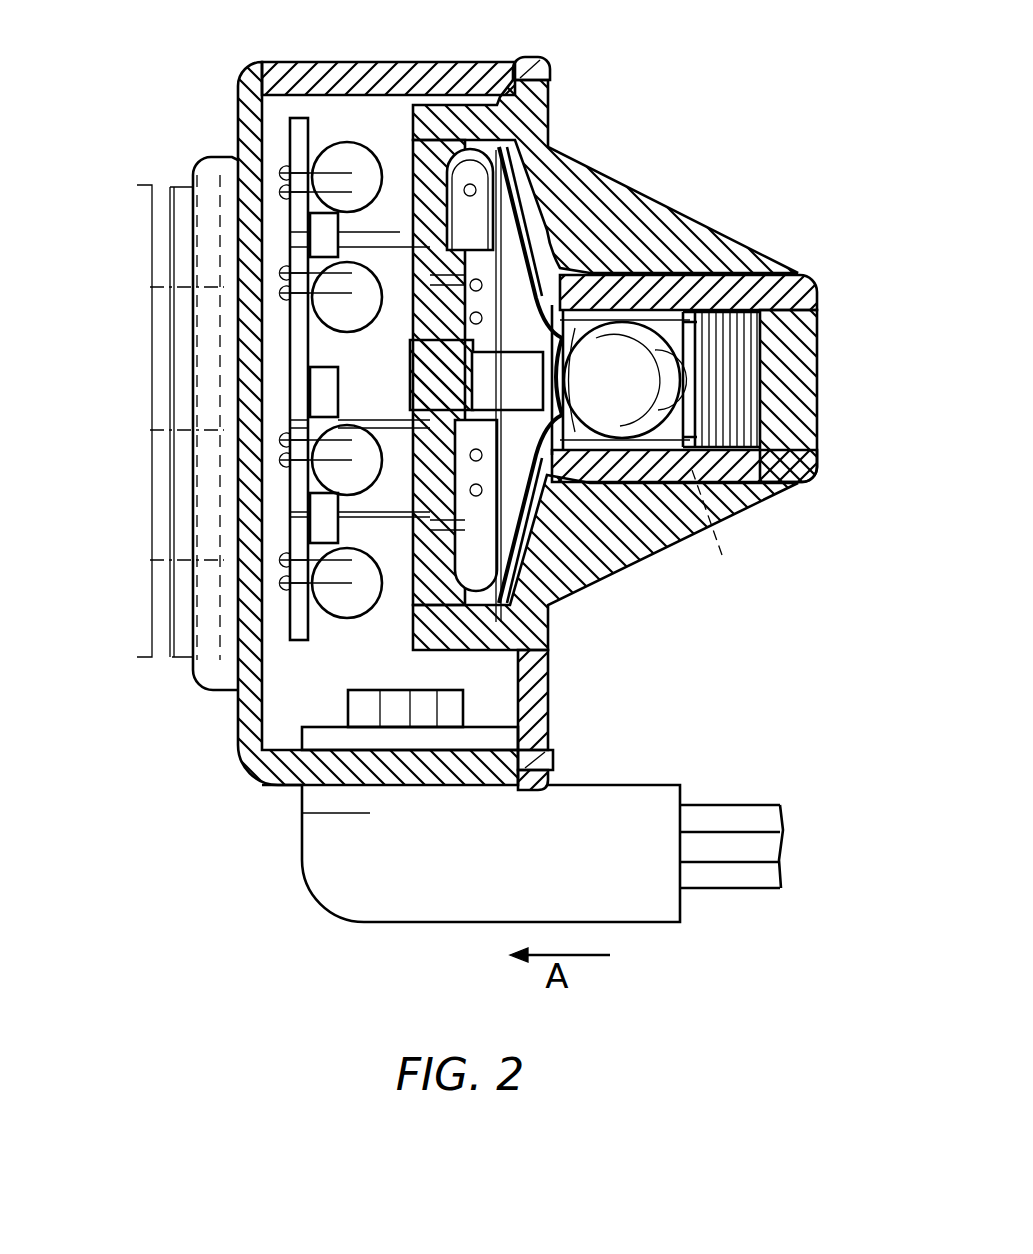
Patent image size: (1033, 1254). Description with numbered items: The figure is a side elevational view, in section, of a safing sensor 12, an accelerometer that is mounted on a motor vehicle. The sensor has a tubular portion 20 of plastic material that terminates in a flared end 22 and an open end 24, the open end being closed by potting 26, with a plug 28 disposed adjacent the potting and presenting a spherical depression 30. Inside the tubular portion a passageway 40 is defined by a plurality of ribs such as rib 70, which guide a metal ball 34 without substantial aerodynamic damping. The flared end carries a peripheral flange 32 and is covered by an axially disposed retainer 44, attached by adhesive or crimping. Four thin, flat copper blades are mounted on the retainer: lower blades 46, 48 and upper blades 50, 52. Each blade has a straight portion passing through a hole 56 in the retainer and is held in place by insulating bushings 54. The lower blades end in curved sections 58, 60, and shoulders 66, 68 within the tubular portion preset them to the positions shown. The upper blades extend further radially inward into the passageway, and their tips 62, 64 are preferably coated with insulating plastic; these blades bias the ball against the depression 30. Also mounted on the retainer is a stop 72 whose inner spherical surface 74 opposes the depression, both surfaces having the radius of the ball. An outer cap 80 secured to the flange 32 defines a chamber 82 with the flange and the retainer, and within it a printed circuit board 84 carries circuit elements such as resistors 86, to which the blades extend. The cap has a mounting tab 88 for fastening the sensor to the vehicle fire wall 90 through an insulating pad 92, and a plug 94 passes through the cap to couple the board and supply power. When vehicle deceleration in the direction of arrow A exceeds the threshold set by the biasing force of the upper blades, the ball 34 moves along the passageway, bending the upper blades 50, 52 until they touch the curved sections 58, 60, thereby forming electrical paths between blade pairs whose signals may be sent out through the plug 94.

The safing sensor 12 is at (785, 577).
The tubular portion 20 is at (757, 287).
The flared end 22 is at (548, 680).
The open end 24 is at (790, 475).
The potting 26 is at (803, 420).
The plug 28 is at (733, 310).
The spherical depression 30 is at (722, 529).
The peripheral flange 32 is at (547, 737).
The metal ball 34 is at (646, 372).
The passageway 40 is at (650, 262).
The retainer 44 is at (400, 628).
The lower blade 46 is at (545, 270).
The lower blade 48 is at (550, 607).
The upper blade 50 is at (550, 580).
The upper blade 52 is at (547, 140).
The insulating bushings 54 is at (397, 528).
The hole 56 is at (425, 522).
The curved section 58 is at (535, 298).
The curved section 60 is at (545, 475).
The tip 62 is at (625, 312).
The tip 64 is at (590, 470).
The shoulder 66 is at (600, 273).
The shoulder 68 is at (540, 520).
The rib 70 is at (685, 478).
The stop 72 is at (400, 378).
The inner spherical surface 74 is at (603, 470).
The outer cap 80 is at (260, 785).
The chamber 82 is at (240, 745).
The printed circuit board 84 is at (297, 137).
The resistors 86 is at (320, 242).
The mounting tab 88 is at (210, 425).
The fire wall 90 is at (150, 220).
The insulating pad 92 is at (173, 290).
The plug 94 is at (432, 888).